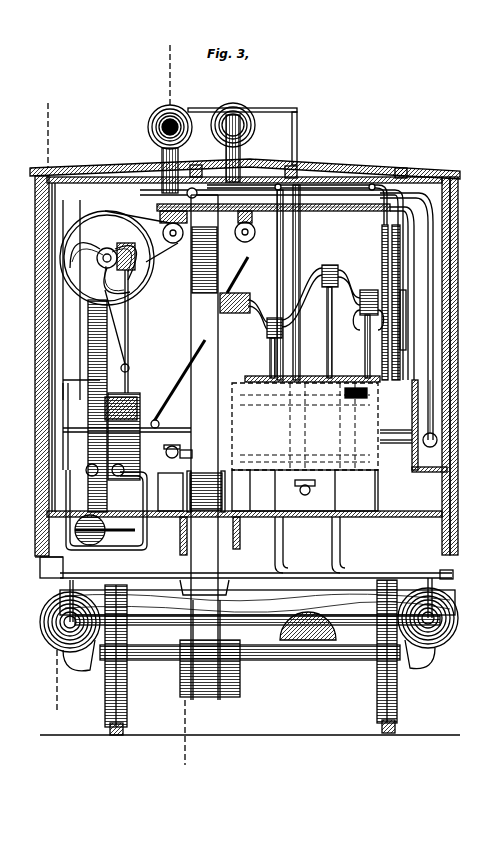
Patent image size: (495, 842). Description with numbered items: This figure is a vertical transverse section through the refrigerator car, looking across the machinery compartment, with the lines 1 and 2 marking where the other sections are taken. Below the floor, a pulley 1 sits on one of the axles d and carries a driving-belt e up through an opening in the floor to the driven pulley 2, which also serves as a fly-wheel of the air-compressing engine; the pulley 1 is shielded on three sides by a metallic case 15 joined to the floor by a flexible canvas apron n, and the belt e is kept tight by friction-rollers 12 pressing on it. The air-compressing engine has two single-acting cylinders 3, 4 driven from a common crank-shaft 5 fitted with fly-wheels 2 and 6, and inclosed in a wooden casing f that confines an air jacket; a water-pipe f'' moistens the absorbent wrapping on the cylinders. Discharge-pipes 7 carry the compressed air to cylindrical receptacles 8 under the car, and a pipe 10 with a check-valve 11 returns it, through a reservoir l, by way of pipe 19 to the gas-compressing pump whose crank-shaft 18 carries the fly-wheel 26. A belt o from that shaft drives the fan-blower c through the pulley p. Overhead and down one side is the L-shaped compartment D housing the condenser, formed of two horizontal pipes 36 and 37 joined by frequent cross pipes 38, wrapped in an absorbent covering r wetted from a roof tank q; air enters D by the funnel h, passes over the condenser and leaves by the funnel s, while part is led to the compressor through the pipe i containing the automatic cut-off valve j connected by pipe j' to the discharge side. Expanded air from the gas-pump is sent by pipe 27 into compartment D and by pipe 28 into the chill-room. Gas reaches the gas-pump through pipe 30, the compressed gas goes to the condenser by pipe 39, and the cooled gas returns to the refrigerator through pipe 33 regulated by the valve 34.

The pulley 1 is at (250, 633).
The driven pulley 2 is at (182, 279).
The single-acting cylinder 3 is at (360, 378).
The single-acting cylinder 4 is at (265, 377).
The crank-shaft 5 is at (301, 304).
The fly-wheel 6 is at (381, 262).
The discharge-pipe 7 is at (257, 566).
The compressed-air receptacle 8 is at (468, 615).
The pipe 10 is at (51, 567).
The check-valve 11 is at (90, 467).
The friction-roller 12 is at (214, 495).
The metallic box or case 15 is at (218, 699).
The crank-shaft 18 is at (107, 249).
The pipe 19 is at (170, 492).
The fly-wheel 26 is at (143, 289).
The pipe 27 is at (383, 429).
The pipe 28 is at (281, 280).
The pipe 30 is at (180, 394).
The pipe 33 is at (112, 488).
The valve 34 is at (178, 460).
The condenser pipe 36 is at (194, 189).
The condenser pipe 37 is at (433, 422).
The connecting pipe 38 is at (362, 211).
The pipe 39 is at (101, 309).
The funnel s is at (158, 117).
The funnel h is at (240, 113).
The tank q is at (242, 136).
The absorbent fibrous covering r is at (328, 184).
The belt o is at (146, 236).
The driving-belt e is at (220, 447).
The pulley p is at (252, 230).
The pipe i is at (296, 344).
The fan-blower c is at (341, 244).
The compartment D is at (406, 313).
The automatic cut-off valve j is at (317, 332).
The wooden casing f is at (306, 443).
The pipe j' is at (356, 404).
The water-pipe f'' is at (422, 426).
The compressed-air reservoir l is at (48, 366).
The flexible apron n is at (186, 564).
The axle d is at (278, 664).